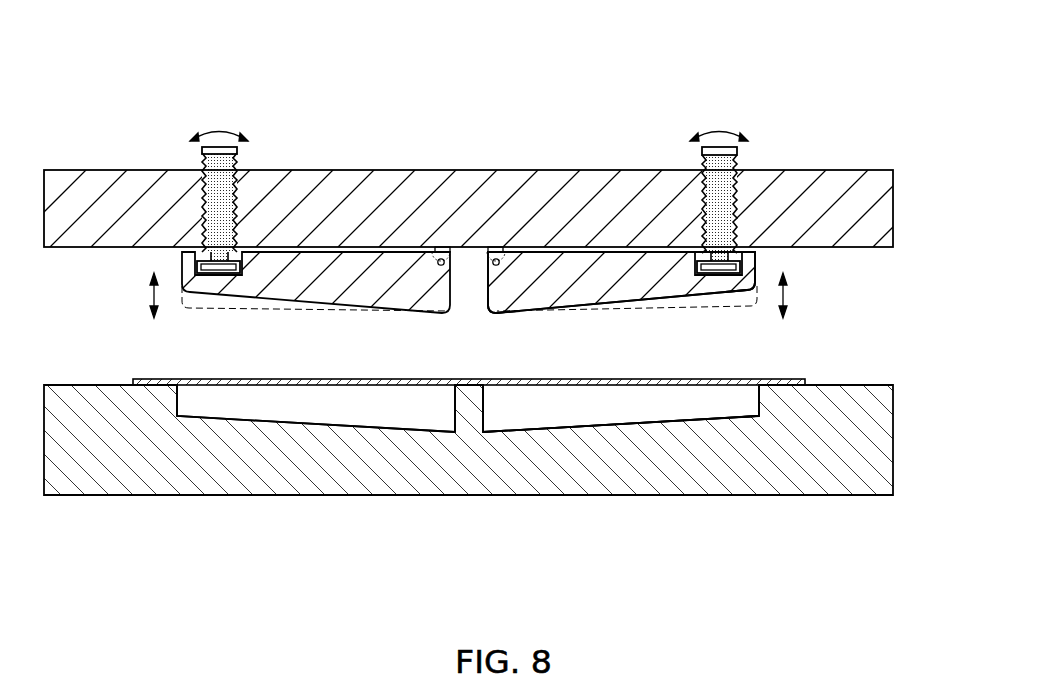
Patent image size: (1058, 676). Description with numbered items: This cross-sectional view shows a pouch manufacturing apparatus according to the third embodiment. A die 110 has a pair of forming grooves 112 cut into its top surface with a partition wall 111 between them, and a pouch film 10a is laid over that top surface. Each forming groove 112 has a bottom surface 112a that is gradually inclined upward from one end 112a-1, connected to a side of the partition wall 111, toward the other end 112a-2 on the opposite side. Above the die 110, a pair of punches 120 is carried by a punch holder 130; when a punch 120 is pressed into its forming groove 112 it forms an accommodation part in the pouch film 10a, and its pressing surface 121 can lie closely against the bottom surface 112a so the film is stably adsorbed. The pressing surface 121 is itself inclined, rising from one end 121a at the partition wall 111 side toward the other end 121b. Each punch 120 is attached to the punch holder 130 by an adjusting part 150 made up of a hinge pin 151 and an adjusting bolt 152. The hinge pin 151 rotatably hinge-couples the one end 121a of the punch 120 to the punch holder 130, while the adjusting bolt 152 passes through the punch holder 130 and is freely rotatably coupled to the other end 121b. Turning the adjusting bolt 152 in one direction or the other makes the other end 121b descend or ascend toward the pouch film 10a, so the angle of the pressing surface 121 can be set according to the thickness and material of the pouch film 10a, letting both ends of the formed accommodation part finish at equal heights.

The pouch film 10a is at (788, 378).
The die 110 is at (893, 440).
The partition wall 111 is at (466, 408).
The forming groove 112 is at (685, 404).
The bottom surface 112a is at (620, 430).
The one end of the bottom surface 112a-1 is at (478, 433).
The other end of the bottom surface 112a-2 is at (758, 420).
The punch 120 is at (757, 261).
The pressing surface 121 is at (672, 300).
The one end of the punch 121a is at (488, 316).
The other end of the punch 121b is at (757, 295).
The punch holder 130 is at (893, 206).
The adjusting part 150 is at (469, 136).
The hinge pin 151 is at (497, 257).
The adjusting bolt 152 is at (718, 150).